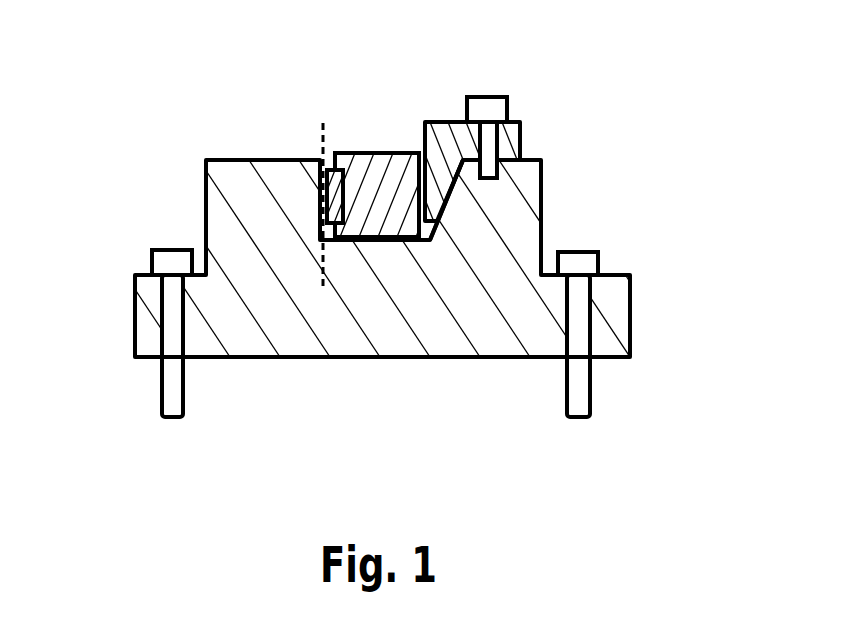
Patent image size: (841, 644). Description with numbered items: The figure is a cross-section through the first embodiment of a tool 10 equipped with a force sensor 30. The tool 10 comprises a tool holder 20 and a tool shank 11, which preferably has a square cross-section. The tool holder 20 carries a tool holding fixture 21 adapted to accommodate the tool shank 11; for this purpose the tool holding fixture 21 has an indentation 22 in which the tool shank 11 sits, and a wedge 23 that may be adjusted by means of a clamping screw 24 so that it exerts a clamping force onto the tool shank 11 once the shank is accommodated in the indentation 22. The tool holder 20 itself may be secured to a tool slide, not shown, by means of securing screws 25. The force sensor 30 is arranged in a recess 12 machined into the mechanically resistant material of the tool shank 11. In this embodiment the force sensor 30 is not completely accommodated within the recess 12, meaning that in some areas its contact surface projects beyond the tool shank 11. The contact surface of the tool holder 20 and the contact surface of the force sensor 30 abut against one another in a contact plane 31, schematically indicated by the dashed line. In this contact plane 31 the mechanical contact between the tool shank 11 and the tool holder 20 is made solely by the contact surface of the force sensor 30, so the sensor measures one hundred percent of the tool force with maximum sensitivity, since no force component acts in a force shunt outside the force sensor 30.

The tool 10 is at (360, 140).
The tool shank 11 is at (378, 153).
The recess 12 is at (368, 239).
The tool holder 20 is at (190, 200).
The tool holding fixture 21 is at (466, 194).
The indentation 22 is at (352, 242).
The wedge 23 is at (439, 146).
The clamping screw 24 is at (488, 110).
The securing screws 25 is at (160, 263).
The force sensor 30 is at (325, 157).
The contact plane 31 is at (322, 252).